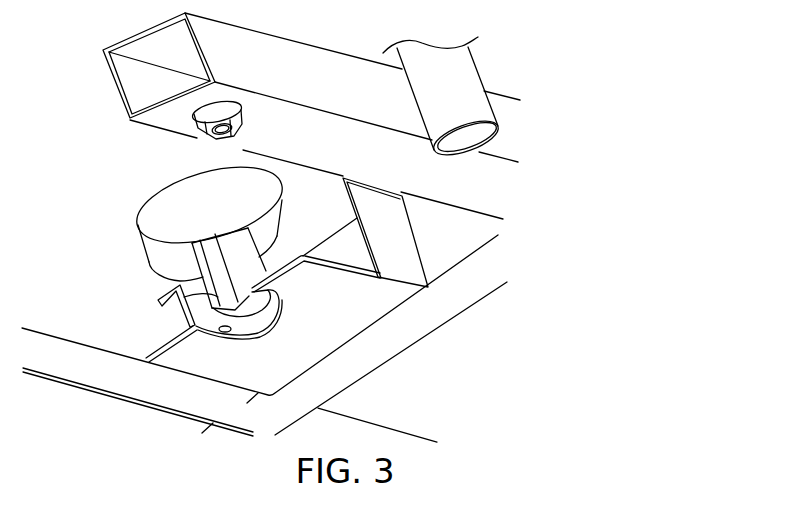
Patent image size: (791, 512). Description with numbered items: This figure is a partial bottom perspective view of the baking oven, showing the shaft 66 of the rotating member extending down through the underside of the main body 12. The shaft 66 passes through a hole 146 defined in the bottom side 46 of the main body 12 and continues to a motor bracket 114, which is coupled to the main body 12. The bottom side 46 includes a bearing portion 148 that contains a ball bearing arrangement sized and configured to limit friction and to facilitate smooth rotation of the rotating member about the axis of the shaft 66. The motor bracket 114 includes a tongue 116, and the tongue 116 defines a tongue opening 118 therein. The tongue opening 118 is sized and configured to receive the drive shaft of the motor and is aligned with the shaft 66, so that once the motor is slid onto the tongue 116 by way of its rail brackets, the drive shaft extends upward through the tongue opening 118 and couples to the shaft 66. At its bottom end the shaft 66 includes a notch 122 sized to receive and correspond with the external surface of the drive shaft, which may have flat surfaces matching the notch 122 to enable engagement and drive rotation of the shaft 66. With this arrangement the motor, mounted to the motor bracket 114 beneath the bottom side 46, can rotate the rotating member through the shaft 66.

The main body 12 is at (147, 420).
The bottom side 46 is at (306, 182).
The shaft 66 is at (250, 265).
The motor bracket 114 is at (432, 239).
The tongue 116 is at (357, 318).
The tongue opening 118 is at (238, 328).
The notch 122 is at (184, 293).
The hole 146 is at (152, 249).
The bearing portion 148 is at (146, 231).